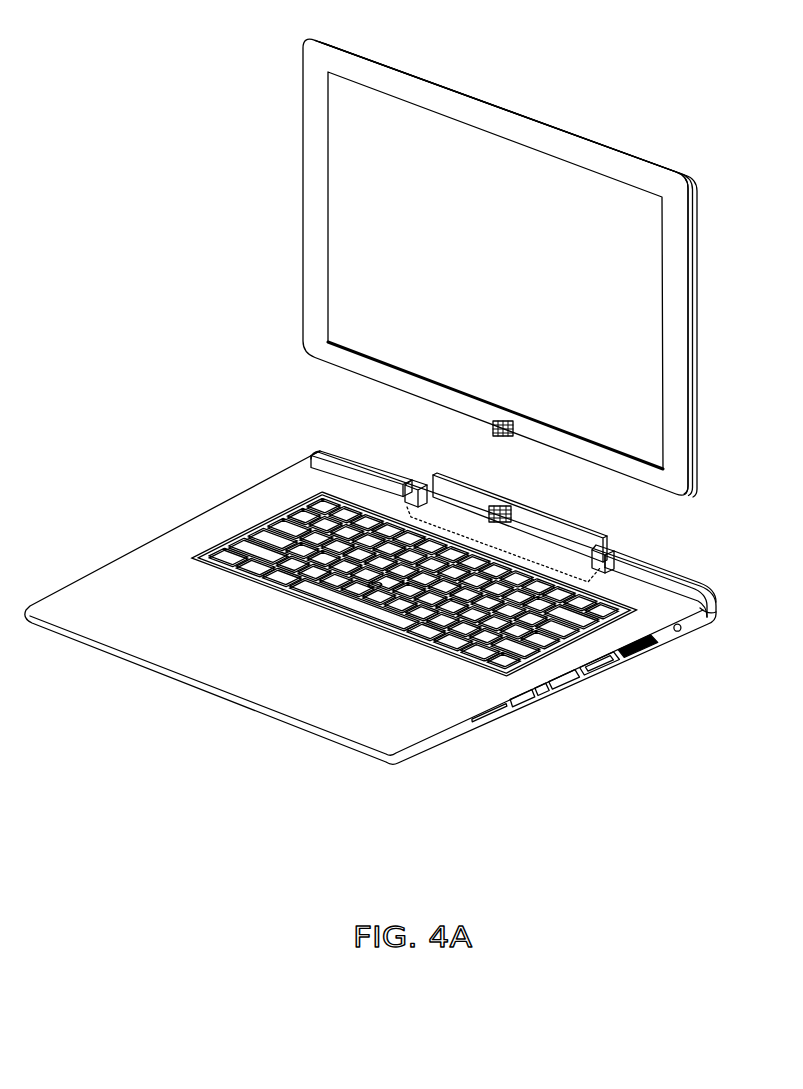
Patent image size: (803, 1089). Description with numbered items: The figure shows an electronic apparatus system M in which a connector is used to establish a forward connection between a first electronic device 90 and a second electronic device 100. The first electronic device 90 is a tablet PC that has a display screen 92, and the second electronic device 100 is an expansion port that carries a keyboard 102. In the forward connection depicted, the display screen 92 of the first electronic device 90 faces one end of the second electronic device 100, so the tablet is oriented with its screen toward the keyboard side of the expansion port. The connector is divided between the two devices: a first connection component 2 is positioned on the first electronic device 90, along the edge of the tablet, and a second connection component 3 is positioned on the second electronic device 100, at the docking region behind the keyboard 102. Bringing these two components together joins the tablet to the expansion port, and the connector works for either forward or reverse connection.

The electronic apparatus system M is at (149, 134).
The first electronic device 90 is at (303, 112).
The display screen 92 is at (350, 225).
The first connection component 2 is at (496, 432).
The second connection component 3 is at (513, 515).
The second electronic device 100 is at (120, 563).
The keyboard 102 is at (262, 533).